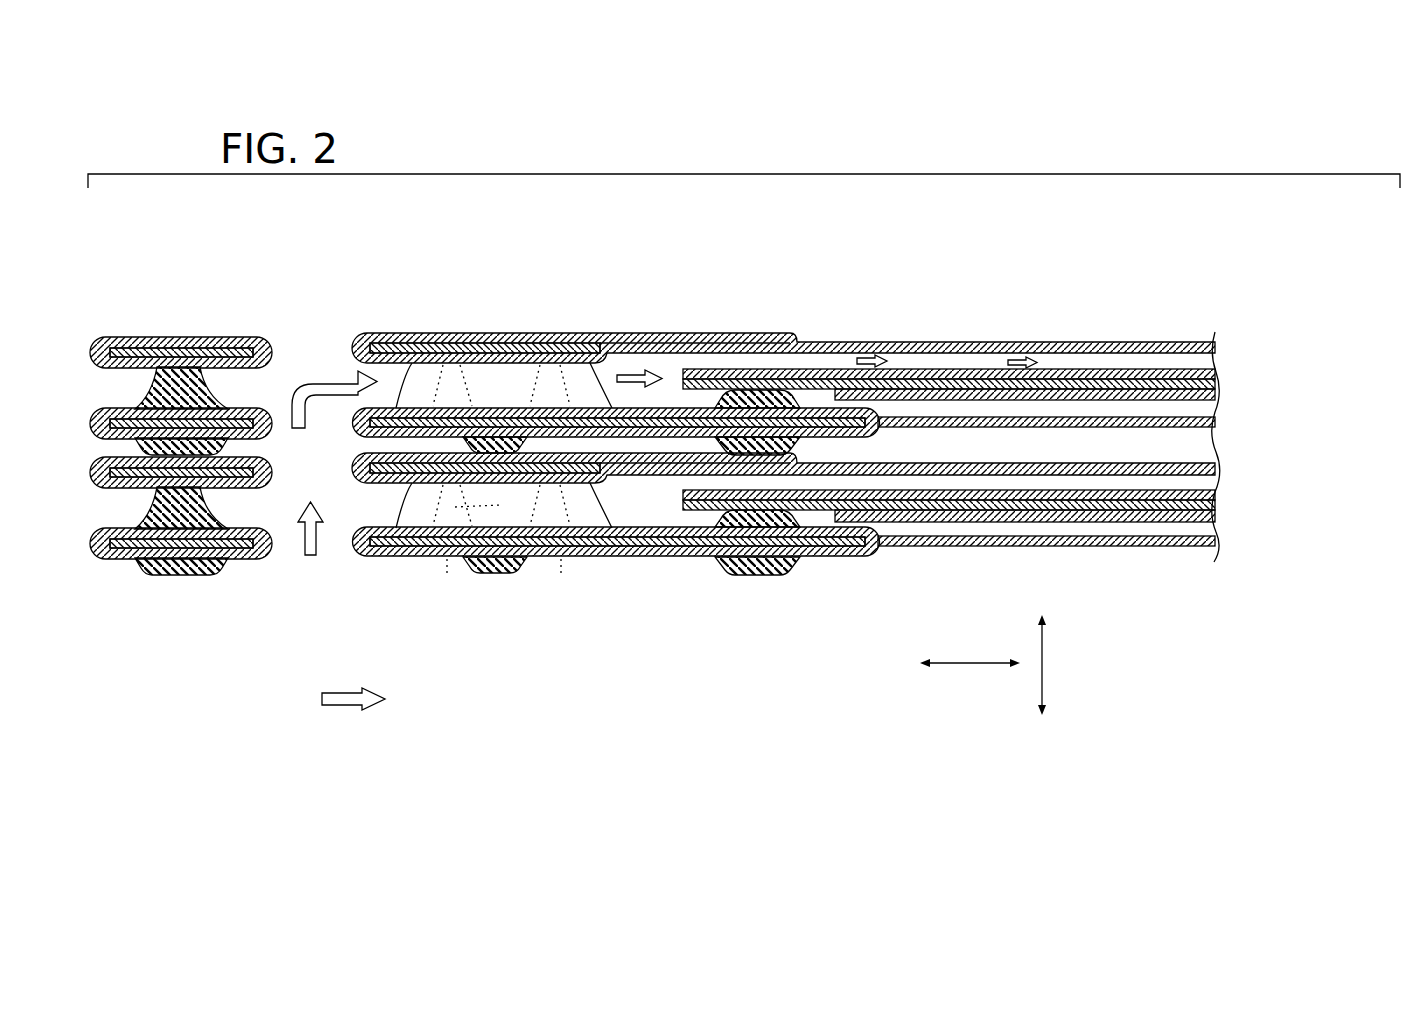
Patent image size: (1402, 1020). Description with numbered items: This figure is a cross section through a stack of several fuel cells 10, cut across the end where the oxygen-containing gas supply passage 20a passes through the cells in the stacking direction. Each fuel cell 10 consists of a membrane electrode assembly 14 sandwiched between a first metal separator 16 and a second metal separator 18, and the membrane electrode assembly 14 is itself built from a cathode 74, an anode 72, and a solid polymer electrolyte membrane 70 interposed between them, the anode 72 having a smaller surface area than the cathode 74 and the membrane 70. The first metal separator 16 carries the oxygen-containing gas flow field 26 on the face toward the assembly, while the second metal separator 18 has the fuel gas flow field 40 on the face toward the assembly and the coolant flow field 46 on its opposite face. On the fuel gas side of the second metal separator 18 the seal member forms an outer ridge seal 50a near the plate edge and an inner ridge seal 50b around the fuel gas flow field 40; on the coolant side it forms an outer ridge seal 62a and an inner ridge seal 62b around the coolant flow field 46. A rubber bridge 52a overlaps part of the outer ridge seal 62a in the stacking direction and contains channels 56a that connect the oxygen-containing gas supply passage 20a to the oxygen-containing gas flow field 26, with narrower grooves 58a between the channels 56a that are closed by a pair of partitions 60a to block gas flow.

The fuel cell 10 is at (1025, 241).
The membrane electrode assembly 14 is at (1011, 373).
The first metal separator 16 is at (1228, 356).
The second metal separator 18 is at (1230, 423).
The oxygen-containing gas supply passage 20a is at (287, 556).
The oxygen-containing gas flow field 26 is at (910, 365).
The fuel gas flow field 40 is at (968, 410).
The coolant flow field 46 is at (902, 445).
The outer ridge seal 50a is at (172, 392).
The inner ridge seal 50b is at (755, 388).
The rubber bridge 52a is at (398, 505).
The channels 56a is at (417, 508).
The grooves 58a is at (466, 486).
The partitions 60a is at (562, 486).
The outer ridge seal 62a is at (183, 575).
The inner ridge seal 62b is at (748, 575).
The solid polymer electrolyte membrane 70 is at (1108, 385).
The anode 72 is at (1158, 396).
The cathode 74 is at (1077, 370).